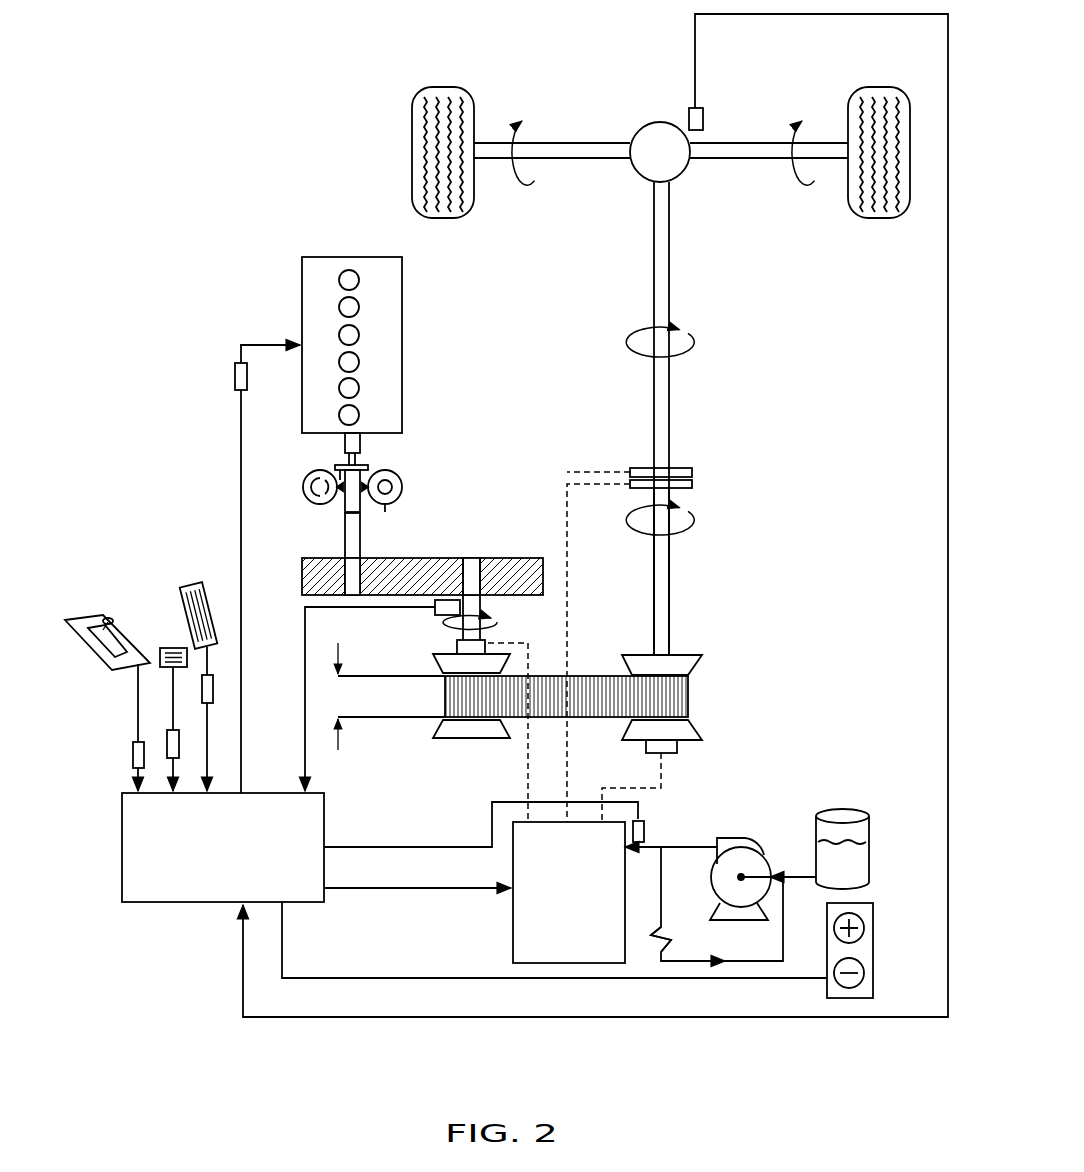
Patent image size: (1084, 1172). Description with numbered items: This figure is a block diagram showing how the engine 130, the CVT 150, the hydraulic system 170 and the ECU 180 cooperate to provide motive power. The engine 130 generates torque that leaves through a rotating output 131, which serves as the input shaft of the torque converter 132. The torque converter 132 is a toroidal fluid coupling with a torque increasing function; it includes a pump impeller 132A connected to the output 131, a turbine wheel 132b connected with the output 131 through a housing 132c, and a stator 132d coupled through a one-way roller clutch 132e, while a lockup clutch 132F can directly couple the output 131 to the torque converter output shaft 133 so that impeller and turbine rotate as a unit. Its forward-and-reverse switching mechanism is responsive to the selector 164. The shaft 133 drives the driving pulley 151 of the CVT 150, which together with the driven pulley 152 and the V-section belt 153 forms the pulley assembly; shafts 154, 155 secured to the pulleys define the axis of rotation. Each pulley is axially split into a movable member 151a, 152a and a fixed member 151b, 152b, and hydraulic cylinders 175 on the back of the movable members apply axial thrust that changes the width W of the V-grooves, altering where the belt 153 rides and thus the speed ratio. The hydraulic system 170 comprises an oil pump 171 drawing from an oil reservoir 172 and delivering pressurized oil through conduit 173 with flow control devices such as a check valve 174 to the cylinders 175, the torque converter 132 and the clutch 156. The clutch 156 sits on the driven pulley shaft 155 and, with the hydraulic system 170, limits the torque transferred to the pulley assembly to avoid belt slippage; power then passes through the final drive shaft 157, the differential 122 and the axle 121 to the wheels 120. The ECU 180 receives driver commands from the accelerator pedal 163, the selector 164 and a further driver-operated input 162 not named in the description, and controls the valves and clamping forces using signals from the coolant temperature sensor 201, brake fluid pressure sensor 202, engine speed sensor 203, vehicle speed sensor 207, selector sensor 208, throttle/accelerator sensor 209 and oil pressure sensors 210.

The wheels 120 is at (440, 87).
The axle 121 is at (573, 160).
The differential 122 is at (683, 177).
The engine 130 is at (402, 322).
The output 131 is at (362, 442).
The torque converter 132 is at (402, 487).
The pump impeller 132A is at (388, 470).
The lockup clutch 132F is at (366, 466).
The turbine wheel 132b is at (400, 496).
The housing 132c is at (340, 466).
The stator 132d is at (322, 492).
The one-way roller clutch 132e is at (318, 482).
The torque converter output shaft 133 is at (362, 540).
The CVT 150 is at (436, 744).
The driving pulley 151 is at (429, 718).
The movable member 151a is at (455, 667).
The fixed member 151b is at (440, 728).
The driven pulley 152 is at (694, 730).
The movable member 152a is at (692, 728).
The fixed member 152b is at (690, 668).
The belt 153 is at (690, 700).
The driving pulley shaft 154 is at (476, 572).
The driven pulley shaft 155 is at (664, 585).
The clutch 156 is at (693, 473).
The final drive shaft 157 is at (662, 400).
The accelerator pedal 162 is at (185, 587).
The accelerator pedal 163 is at (172, 648).
The selector 164 is at (80, 616).
The hydraulic system 170 is at (569, 892).
The oil pump 171 is at (727, 838).
The oil reservoir 172 is at (843, 809).
The conduit 173 is at (538, 732).
The check valve 174 is at (664, 935).
The hydraulic cylinders 175 is at (455, 652).
The ECU 180 is at (474, 885).
The coolant temperature sensor 201 is at (233, 375).
The brake fluid pressure sensor 202 is at (167, 737).
The engine speed sensor 203 is at (445, 600).
The vehicle speed sensor 207 is at (703, 118).
The selector sensor 208 is at (133, 762).
The throttle/accelerator sensor 209 is at (213, 690).
The oil pressure sensors 210 is at (645, 832).